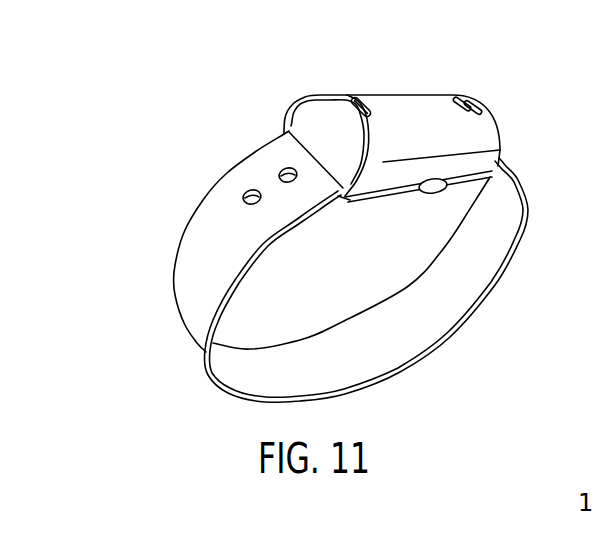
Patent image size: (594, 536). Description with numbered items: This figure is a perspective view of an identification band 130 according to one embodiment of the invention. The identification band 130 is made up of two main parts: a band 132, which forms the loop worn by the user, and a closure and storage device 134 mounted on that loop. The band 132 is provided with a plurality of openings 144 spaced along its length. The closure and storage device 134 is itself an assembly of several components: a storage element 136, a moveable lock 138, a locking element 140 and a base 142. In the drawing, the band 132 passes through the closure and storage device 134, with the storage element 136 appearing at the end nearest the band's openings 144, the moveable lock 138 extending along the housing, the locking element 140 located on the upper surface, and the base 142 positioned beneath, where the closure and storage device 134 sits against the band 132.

The identification band 130 is at (152, 258).
The band 132 is at (196, 302).
The closure and storage device 134 is at (290, 113).
The storage element 136 is at (370, 170).
The moveable lock 138 is at (483, 133).
The locking element 140 is at (354, 97).
The base 142 is at (415, 191).
The openings 144 is at (246, 193).